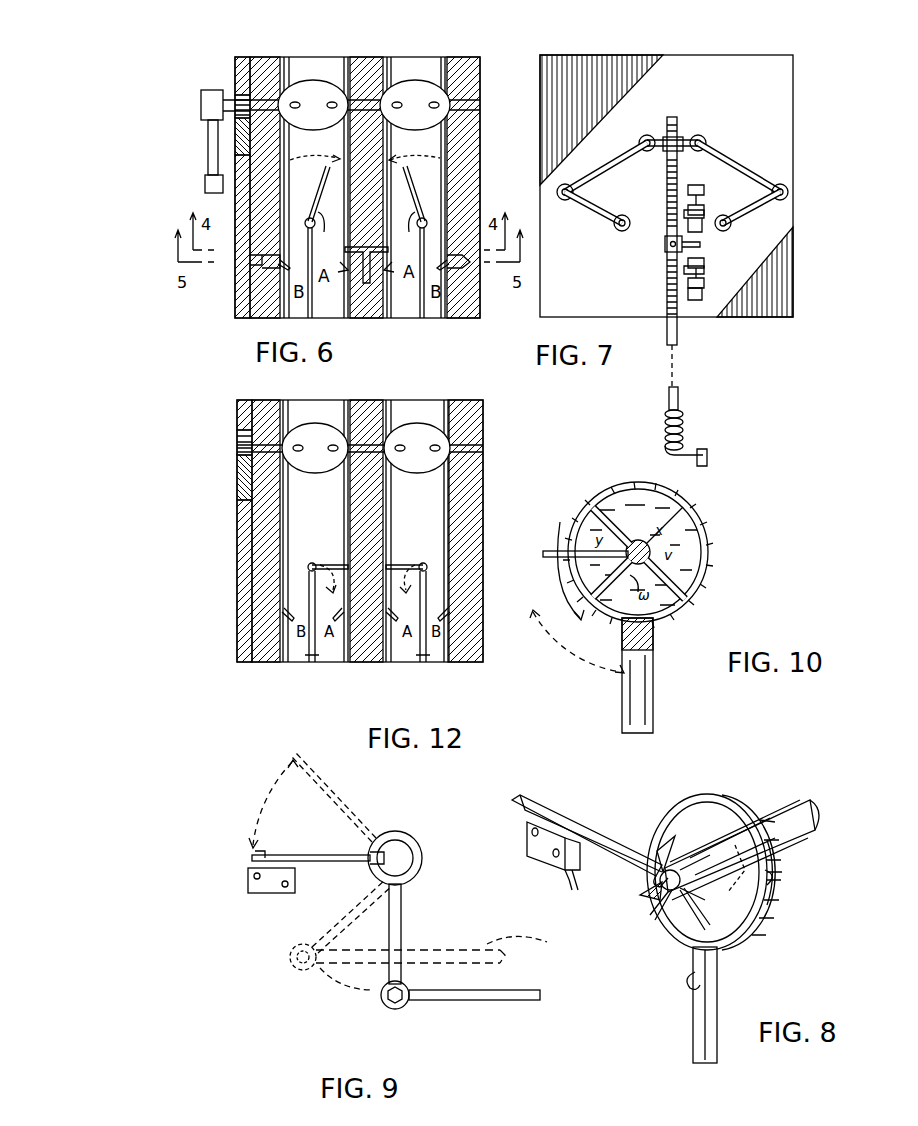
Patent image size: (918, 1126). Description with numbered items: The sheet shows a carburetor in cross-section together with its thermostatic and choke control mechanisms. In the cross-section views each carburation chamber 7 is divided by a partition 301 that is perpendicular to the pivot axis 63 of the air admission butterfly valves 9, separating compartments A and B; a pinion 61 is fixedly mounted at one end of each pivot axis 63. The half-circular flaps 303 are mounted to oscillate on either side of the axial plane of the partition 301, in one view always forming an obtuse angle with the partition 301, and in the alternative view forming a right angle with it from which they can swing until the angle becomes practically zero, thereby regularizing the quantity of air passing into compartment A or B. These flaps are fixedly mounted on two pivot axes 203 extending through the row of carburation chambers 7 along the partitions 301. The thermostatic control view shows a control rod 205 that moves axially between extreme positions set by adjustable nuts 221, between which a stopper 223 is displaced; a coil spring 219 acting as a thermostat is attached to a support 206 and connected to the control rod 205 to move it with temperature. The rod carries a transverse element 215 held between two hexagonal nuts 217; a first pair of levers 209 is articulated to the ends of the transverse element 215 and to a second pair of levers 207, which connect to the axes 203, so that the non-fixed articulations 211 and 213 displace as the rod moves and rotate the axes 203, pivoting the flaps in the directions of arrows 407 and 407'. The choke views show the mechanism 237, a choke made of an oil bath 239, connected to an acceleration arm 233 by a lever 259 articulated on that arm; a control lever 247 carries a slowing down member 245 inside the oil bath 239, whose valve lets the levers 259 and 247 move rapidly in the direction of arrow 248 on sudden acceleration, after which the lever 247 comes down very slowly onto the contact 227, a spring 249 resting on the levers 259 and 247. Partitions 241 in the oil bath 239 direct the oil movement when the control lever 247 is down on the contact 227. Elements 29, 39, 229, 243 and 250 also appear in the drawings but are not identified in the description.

In FIG. 6, the carburation chamber 7 is at (398, 60).
In FIG. 12, the carburation chamber 7 is at (398, 412).
In FIG. 6, the air admission butterfly valve 9 is at (315, 88).
In FIG. 12, the air admission butterfly valve 9 is at (315, 430).
In FIG. 6, the stop lever 29 is at (468, 250).
In FIG. 6, the bushing 39 is at (240, 140).
In FIG. 12, the bushing 39 is at (240, 492).
In FIG. 6, the pinion 61 is at (238, 95).
In FIG. 12, the pinion 61 is at (240, 455).
In FIG. 6, the pivot axis 63 is at (268, 100).
In FIG. 12, the pivot axis 63 is at (270, 415).
In FIG. 7, the pivot axis 203 is at (618, 230).
In FIG. 12, the pivot axis 203 is at (308, 567).
In FIG. 7, the control rod 205 is at (677, 332).
In FIG. 7, the support 206 is at (712, 450).
In FIG. 7, the lever 207 is at (605, 205).
In FIG. 7, the lever 209 is at (600, 140).
In FIG. 7, the articulation 211 is at (572, 185).
In FIG. 7, the articulation 213 is at (645, 135).
In FIG. 7, the transverse element 215 is at (665, 138).
In FIG. 7, the hexagonal nut 217 is at (694, 130).
In FIG. 7, the coil spring 219 is at (683, 432).
In FIG. 7, the adjustable nut 221 is at (705, 185).
In FIG. 7, the stopper 223 is at (668, 238).
In FIG. 9, the contact 227 is at (268, 903).
In FIG. 8, the contact 227 is at (550, 860).
In FIG. 9, the hook end 229 is at (252, 865).
In FIG. 9, the acceleration arm 233 is at (520, 992).
In FIG. 10, the mechanism 237 is at (706, 572).
In FIG. 8, the mechanism 237 is at (735, 810).
In FIG. 10, the oil bath 239 is at (622, 490).
In FIG. 8, the oil bath 239 is at (690, 930).
In FIG. 10, the partition 241 is at (660, 535).
In FIG. 8, the partition 241 is at (712, 810).
In FIG. 10, the vane 243 is at (638, 568).
In FIG. 8, the vane 243 is at (735, 850).
In FIG. 10, the slowing down member 245 is at (625, 565).
In FIG. 8, the slowing down member 245 is at (810, 828).
In FIG. 10, the control lever 247 is at (557, 550).
In FIG. 9, the control lever 247 is at (318, 855).
In FIG. 8, the control lever 247 is at (585, 825).
In FIG. 10, the arrow 248 is at (597, 680).
In FIG. 9, the spring 249 is at (410, 840).
In FIG. 8, the spring 249 is at (775, 882).
In FIG. 9, the arc of rotation 250 is at (260, 804).
In FIG. 6, the lever 259 is at (208, 145).
In FIG. 9, the lever 259 is at (402, 922).
In FIG. 8, the lever 259 is at (718, 998).
In FIG. 6, the partition 301 is at (415, 300).
In FIG. 12, the partition 301 is at (315, 655).
In FIG. 6, the half-circular flap 303 is at (365, 186).
In FIG. 12, the half-circular flap 303 is at (330, 562).
In FIG. 12, the arrow 407 is at (266, 613).
In FIG. 12, the arrow 407' is at (460, 612).